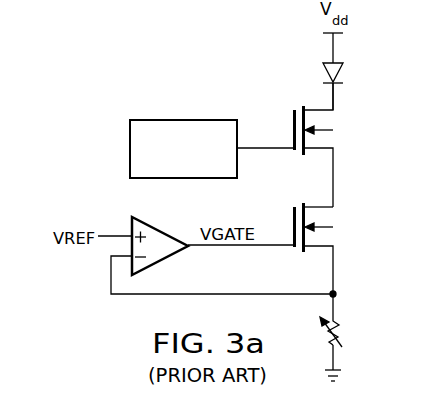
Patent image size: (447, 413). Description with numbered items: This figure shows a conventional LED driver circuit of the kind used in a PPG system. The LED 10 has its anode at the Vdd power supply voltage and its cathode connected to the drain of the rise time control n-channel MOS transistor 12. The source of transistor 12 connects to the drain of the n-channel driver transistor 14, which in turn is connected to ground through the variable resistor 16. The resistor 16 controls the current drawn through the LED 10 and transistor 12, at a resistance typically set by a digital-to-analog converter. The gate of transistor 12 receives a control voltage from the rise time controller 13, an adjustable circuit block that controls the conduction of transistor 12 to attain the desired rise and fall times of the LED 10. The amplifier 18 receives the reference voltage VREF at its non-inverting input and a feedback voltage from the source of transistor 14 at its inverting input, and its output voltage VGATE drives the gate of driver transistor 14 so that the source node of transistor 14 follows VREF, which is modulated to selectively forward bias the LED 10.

The LED 10 is at (343, 70).
The rise time control n-channel MOS transistor 12 is at (292, 119).
The rise time controller 13 is at (183, 120).
The n-channel driver transistor 14 is at (292, 216).
The variable resistor 16 is at (345, 330).
The amplifier 18 is at (165, 229).